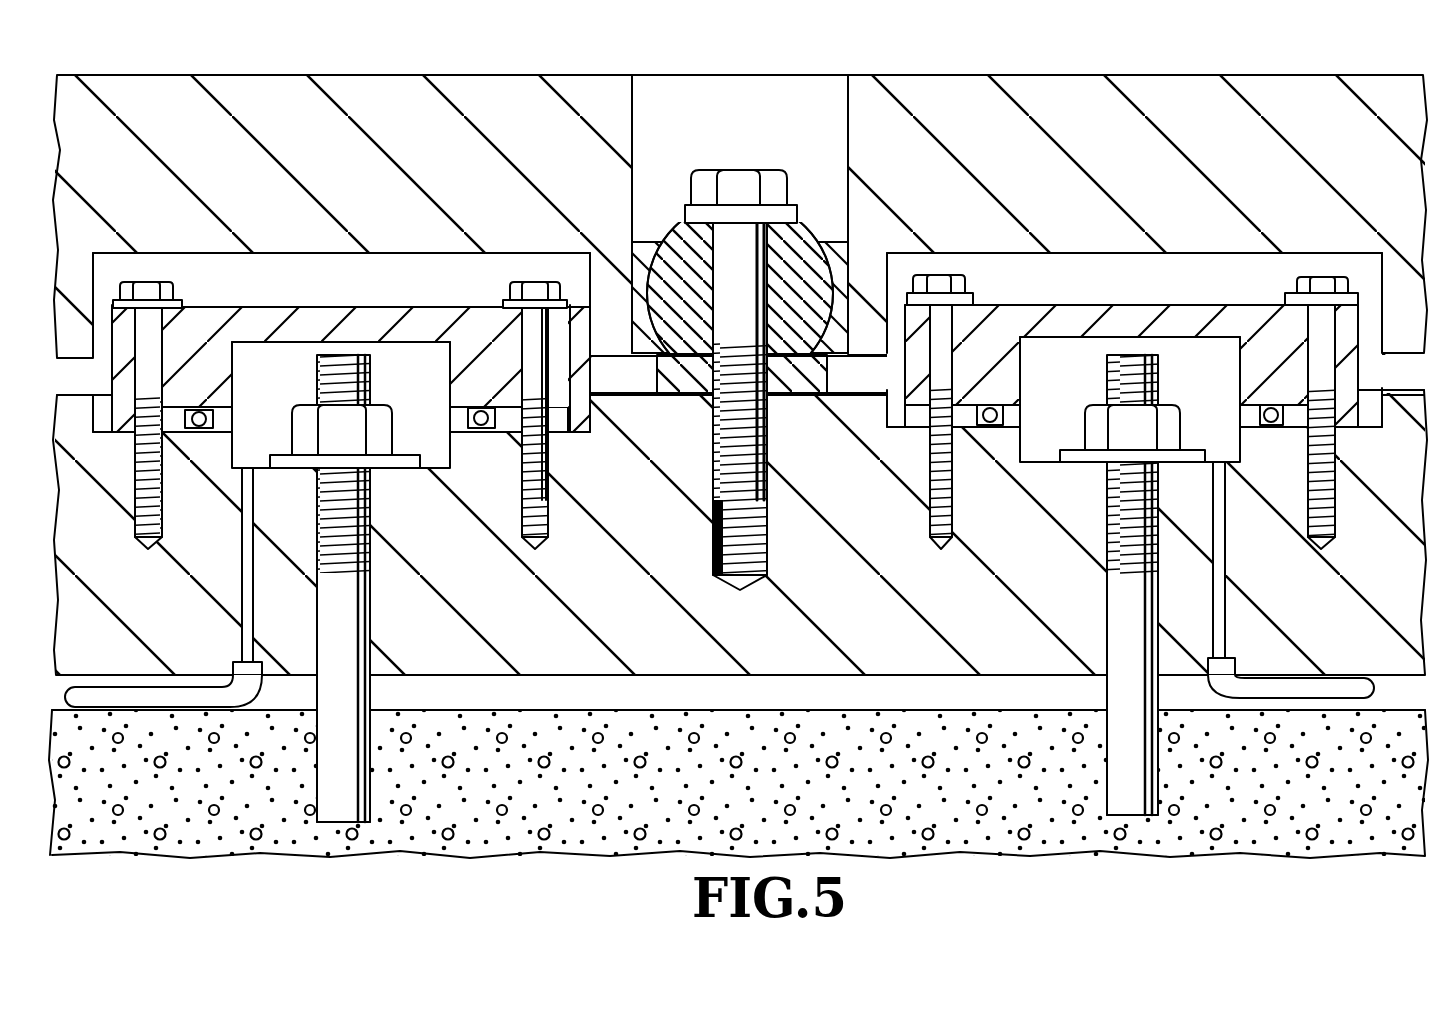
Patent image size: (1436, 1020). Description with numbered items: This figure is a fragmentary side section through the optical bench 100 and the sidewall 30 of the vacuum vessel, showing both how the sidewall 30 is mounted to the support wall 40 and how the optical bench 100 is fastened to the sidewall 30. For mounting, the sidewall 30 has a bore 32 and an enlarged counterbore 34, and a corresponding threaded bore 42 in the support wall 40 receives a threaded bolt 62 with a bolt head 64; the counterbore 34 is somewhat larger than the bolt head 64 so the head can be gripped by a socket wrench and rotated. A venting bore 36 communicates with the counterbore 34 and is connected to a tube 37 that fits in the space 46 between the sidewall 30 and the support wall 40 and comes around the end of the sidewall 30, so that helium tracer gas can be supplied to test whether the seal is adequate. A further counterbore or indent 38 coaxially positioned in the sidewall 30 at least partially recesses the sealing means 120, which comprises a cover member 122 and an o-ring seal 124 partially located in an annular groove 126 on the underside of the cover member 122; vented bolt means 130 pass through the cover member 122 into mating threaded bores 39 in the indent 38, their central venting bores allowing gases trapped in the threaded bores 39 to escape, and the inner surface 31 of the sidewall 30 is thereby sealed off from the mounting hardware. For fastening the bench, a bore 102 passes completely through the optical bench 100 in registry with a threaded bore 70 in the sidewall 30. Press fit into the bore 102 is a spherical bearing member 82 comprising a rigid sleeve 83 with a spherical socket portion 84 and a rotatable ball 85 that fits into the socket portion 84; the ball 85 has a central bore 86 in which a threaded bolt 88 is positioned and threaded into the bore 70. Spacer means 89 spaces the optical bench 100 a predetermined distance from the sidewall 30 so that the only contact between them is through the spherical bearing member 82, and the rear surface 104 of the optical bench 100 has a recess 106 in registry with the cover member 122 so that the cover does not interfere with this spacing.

The sidewall 30 is at (162, 625).
The inner surface 31 is at (852, 381).
The bore 32 is at (372, 624).
The counterbore 34 is at (252, 428).
The venting bore 36 is at (241, 568).
The tube 37 is at (180, 697).
The counterbore or indent 38 is at (578, 416).
The threaded bores 39 is at (957, 482).
The support wall 40 is at (618, 805).
The bore 42 is at (372, 780).
The space 46 is at (710, 697).
The threaded bolt 62 is at (370, 548).
The bolt head 64 is at (383, 410).
The threaded bore 70 is at (770, 515).
The spherical bearing member 82 is at (662, 196).
The rigid sleeve 83 is at (848, 242).
The spherical socket portion 84 is at (858, 268).
The rotatable ball 85 is at (800, 232).
The central bore 86 is at (630, 258).
The threaded bolt 88 is at (733, 170).
The spacer means 89 is at (688, 381).
The optical bench 100 is at (318, 135).
The bore 102 is at (848, 128).
The rear surface 104 is at (78, 360).
The recess 106 is at (292, 276).
The sealing means 120 is at (1080, 291).
The cover member 122 is at (1217, 336).
The o-ring seal 124 is at (482, 430).
The annular groove 126 is at (483, 400).
The vented bolt means 130 is at (945, 278).